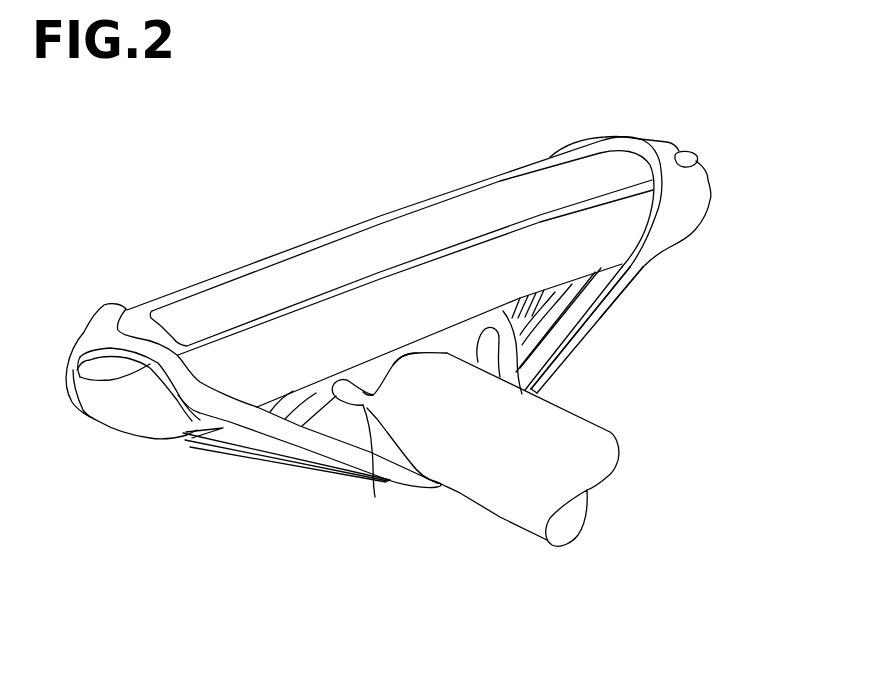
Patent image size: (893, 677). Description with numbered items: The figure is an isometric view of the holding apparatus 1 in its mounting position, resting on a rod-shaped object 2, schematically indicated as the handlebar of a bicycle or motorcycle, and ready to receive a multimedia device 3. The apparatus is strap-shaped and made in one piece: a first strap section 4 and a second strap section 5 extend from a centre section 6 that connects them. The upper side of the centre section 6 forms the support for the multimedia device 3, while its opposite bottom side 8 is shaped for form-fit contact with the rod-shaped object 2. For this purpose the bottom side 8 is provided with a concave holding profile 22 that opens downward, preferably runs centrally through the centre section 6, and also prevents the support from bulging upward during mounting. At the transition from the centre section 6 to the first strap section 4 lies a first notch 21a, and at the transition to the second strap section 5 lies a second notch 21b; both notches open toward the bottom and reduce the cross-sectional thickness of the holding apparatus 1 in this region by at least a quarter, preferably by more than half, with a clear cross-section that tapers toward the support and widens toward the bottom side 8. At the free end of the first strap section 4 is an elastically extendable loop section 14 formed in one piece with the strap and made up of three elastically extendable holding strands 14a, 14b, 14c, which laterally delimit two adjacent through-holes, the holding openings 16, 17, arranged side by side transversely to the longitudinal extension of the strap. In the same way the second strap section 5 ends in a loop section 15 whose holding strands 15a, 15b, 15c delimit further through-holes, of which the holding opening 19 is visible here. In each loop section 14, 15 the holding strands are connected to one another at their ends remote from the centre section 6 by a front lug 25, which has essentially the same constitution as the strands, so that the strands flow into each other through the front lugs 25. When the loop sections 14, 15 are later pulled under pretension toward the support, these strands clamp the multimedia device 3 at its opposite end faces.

The holding apparatus 1 is at (624, 384).
The rod-shaped object 2 is at (504, 505).
The multimedia device 3 is at (463, 207).
The first strap section 4 is at (381, 462).
The second strap section 5 is at (522, 373).
The centre section 6 is at (367, 372).
The bottom side 8 is at (412, 364).
The loop section 14 is at (603, 343).
The holding strand 14a is at (514, 310).
The holding strand 14b is at (632, 270).
The holding strand 14c is at (577, 288).
The loop section 15 is at (247, 490).
The holding strand 15a is at (268, 400).
The holding strand 15b is at (297, 438).
The holding strand 15c is at (220, 440).
The holding opening 16 is at (540, 308).
The holding opening 17 is at (592, 292).
The holding opening 19 is at (218, 429).
The first notch 21a is at (382, 410).
The second notch 21b is at (500, 360).
The holding profile 22 is at (450, 352).
The front lug 25 is at (103, 323).